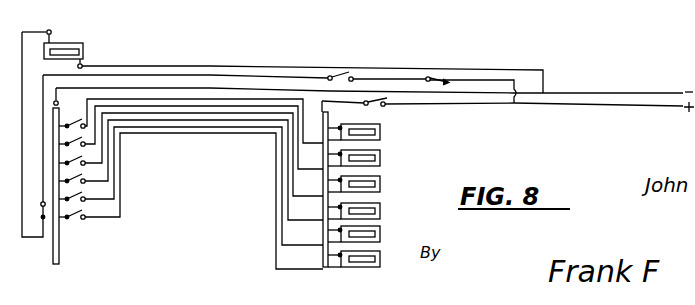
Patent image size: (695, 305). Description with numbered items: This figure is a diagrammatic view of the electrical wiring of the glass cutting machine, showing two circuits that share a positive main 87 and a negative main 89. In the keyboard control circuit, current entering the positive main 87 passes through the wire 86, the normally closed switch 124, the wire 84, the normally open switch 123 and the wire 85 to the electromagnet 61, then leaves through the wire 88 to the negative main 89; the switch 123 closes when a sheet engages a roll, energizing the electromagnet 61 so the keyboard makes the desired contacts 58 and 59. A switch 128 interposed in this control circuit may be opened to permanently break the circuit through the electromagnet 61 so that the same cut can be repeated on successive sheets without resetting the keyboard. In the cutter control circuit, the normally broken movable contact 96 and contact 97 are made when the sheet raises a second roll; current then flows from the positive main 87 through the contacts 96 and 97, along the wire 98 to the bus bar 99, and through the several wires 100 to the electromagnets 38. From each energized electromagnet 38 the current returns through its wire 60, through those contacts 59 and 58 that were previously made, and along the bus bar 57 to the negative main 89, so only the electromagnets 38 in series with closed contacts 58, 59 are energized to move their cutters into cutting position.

The electromagnet 61 is at (85, 41).
The switch 128 is at (41, 218).
The wire 85 is at (236, 52).
The switch 123 is at (350, 75).
The wire 84 is at (384, 51).
The wire 88 is at (432, 51).
The switch 124 is at (477, 51).
The wire 86 is at (513, 54).
The negative main 89 is at (638, 92).
The positive main 87 is at (586, 104).
The wire 98 is at (354, 104).
The movable contact 96 is at (369, 106).
The contact 97 is at (385, 105).
The bus bar 57 is at (57, 252).
The contact 58 is at (70, 220).
The contact 59 is at (84, 220).
The wire 60 is at (121, 216).
The bus bar 99 is at (323, 258).
The electromagnet 38 is at (383, 257).
The wire 100 is at (338, 258).